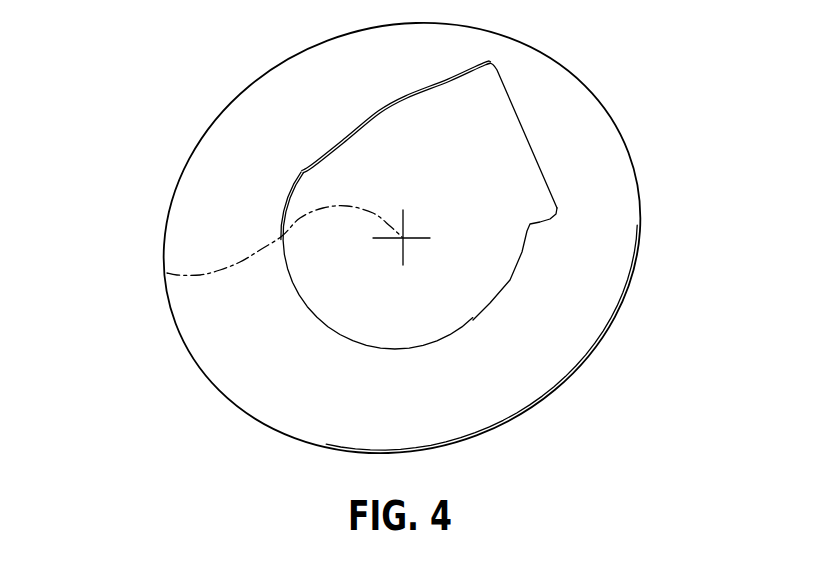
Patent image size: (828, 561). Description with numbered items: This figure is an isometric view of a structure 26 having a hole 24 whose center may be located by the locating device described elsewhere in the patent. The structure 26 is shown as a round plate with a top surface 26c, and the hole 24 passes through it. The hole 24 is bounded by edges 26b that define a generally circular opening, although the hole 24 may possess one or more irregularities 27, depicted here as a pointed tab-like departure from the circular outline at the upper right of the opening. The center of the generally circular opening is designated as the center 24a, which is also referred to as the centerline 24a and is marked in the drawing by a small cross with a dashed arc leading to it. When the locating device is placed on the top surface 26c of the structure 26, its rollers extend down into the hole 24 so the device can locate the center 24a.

The hole 24 is at (519, 278).
The center of the hole 24a is at (167, 273).
The structure 26 is at (238, 158).
The edges 26b is at (368, 344).
The top surface 26c is at (306, 389).
The irregularities 27 is at (528, 125).